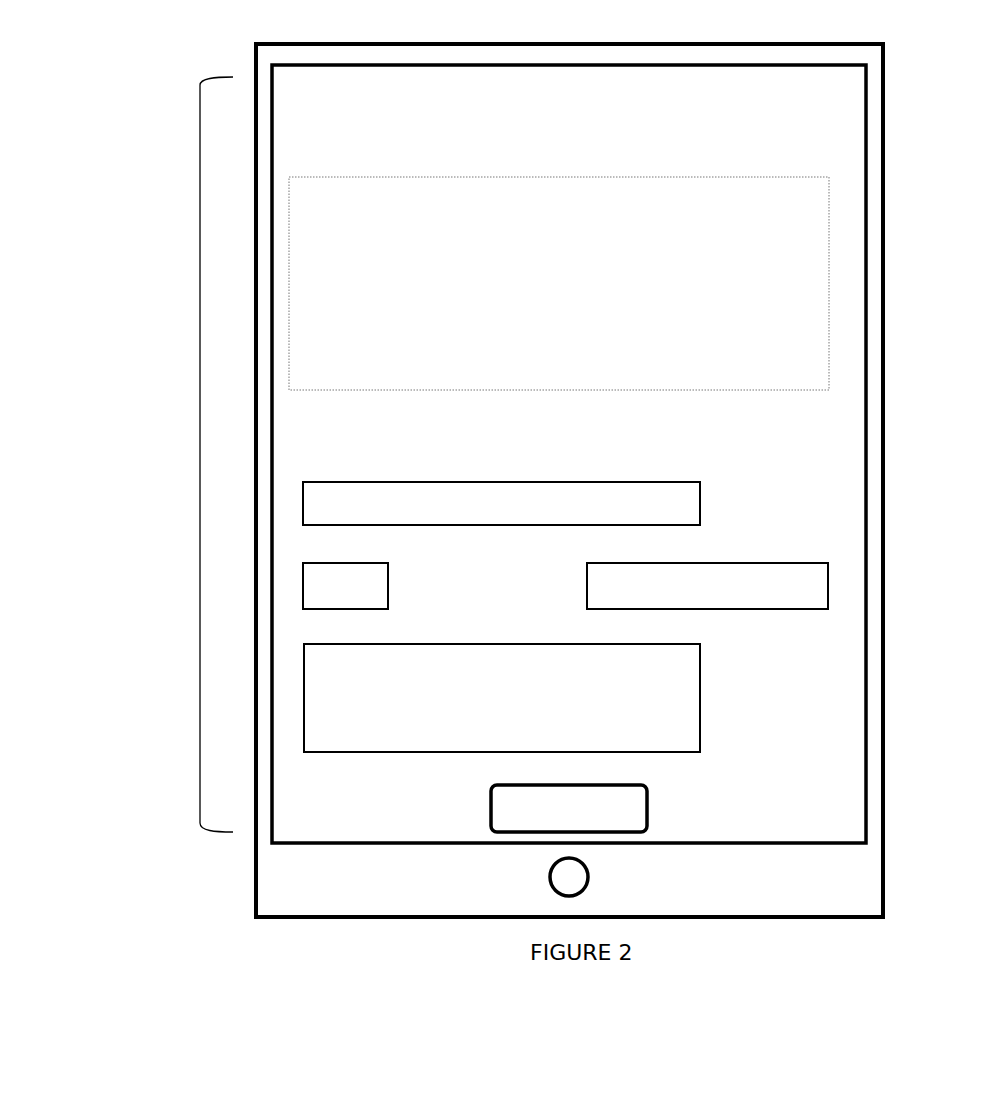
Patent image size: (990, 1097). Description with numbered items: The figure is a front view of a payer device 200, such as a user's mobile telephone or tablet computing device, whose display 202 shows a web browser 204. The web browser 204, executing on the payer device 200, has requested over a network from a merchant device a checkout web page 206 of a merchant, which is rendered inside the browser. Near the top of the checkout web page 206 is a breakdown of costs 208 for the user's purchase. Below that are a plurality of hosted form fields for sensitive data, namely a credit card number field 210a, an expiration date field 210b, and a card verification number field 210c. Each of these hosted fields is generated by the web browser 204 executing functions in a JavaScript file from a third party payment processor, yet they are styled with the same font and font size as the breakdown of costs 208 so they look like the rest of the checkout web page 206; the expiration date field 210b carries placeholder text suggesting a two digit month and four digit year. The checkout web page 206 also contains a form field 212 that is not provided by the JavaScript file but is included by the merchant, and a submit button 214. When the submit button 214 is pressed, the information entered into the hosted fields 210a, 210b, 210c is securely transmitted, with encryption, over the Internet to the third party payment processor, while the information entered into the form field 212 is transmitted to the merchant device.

The payer device 200 is at (254, 322).
The display 202 is at (271, 393).
The web browser 204 is at (200, 455).
The checkout web page 206 is at (830, 107).
The breakdown of costs 208 is at (829, 277).
The credit card number field 210a is at (700, 503).
The expiration date field 210b is at (828, 585).
The card verification number field 210c is at (303, 588).
The form field 212 is at (700, 695).
The submit button 214 is at (649, 805).